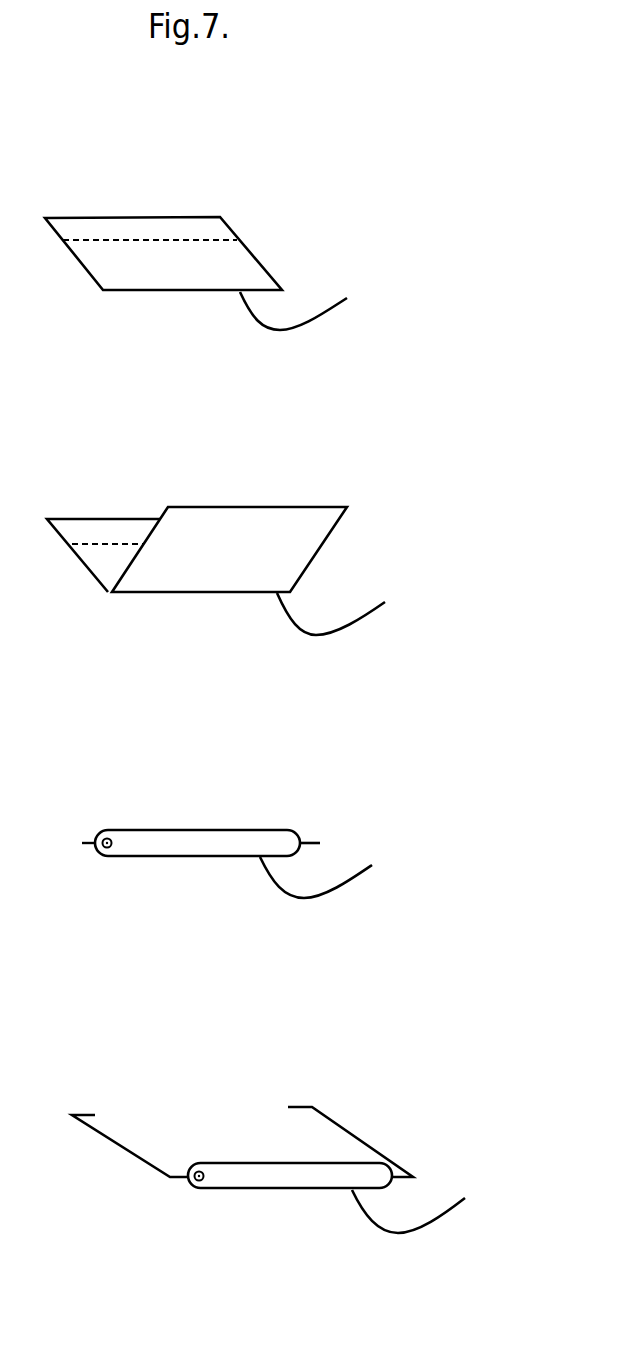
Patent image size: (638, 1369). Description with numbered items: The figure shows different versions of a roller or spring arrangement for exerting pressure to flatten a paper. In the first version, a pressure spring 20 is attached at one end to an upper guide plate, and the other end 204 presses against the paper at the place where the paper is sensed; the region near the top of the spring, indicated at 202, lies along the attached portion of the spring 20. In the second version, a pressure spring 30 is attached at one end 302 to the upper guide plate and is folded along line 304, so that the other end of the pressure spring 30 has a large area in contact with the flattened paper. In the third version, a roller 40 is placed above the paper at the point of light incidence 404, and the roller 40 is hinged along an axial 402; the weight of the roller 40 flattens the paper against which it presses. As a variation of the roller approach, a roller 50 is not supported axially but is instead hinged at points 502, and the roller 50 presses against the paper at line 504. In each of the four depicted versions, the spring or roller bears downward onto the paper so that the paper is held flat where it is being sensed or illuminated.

The pressure spring 20 is at (163, 253).
The fold line of first pad 202 is at (215, 225).
The other end of pressure spring 204 is at (320, 297).
The pressure spring 30 is at (229, 549).
The attached end of pressure spring 302 is at (85, 532).
The fold line 304 is at (356, 603).
The roller 40 is at (153, 840).
The axial hinge 402 is at (313, 843).
The point of light incidence 404 is at (341, 867).
The roller 50 is at (260, 1177).
The hinge points 502 is at (307, 1102).
The pressing line 504 is at (433, 1202).